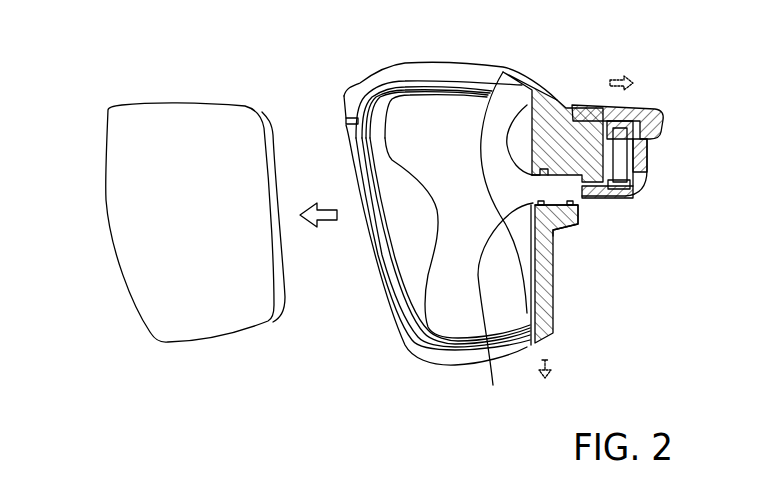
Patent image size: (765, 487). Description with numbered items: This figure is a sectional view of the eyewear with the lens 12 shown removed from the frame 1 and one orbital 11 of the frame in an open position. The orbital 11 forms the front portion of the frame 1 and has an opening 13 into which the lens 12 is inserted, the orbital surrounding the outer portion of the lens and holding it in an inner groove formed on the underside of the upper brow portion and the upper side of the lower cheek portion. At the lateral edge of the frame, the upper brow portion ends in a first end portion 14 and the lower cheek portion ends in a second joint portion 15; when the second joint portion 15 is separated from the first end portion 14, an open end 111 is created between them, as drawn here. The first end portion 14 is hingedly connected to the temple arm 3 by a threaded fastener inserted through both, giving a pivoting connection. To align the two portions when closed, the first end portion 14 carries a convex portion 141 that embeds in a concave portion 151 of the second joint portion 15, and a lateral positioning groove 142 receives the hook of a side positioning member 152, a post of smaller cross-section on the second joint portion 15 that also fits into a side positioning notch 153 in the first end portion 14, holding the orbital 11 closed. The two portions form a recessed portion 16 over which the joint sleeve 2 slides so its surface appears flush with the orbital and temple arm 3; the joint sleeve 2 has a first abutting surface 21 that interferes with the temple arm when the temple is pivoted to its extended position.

The frame 1 is at (452, 57).
The orbital 11 is at (394, 75).
The lens 12 is at (112, 205).
The opening 13 is at (417, 268).
The first end portion 14 is at (591, 118).
The convex portion 141 is at (630, 112).
The lateral positioning groove 142 is at (529, 90).
The second joint portion 15 is at (568, 197).
The concave portion 151 is at (557, 277).
The side positioning member 152 is at (505, 305).
The side positioning notch 153 is at (542, 181).
The recessed portion 16 is at (643, 110).
The joint sleeve 2 is at (575, 103).
The first abutting surface 21 is at (660, 117).
The temple arm 3 is at (653, 172).
The open end 111 is at (586, 228).